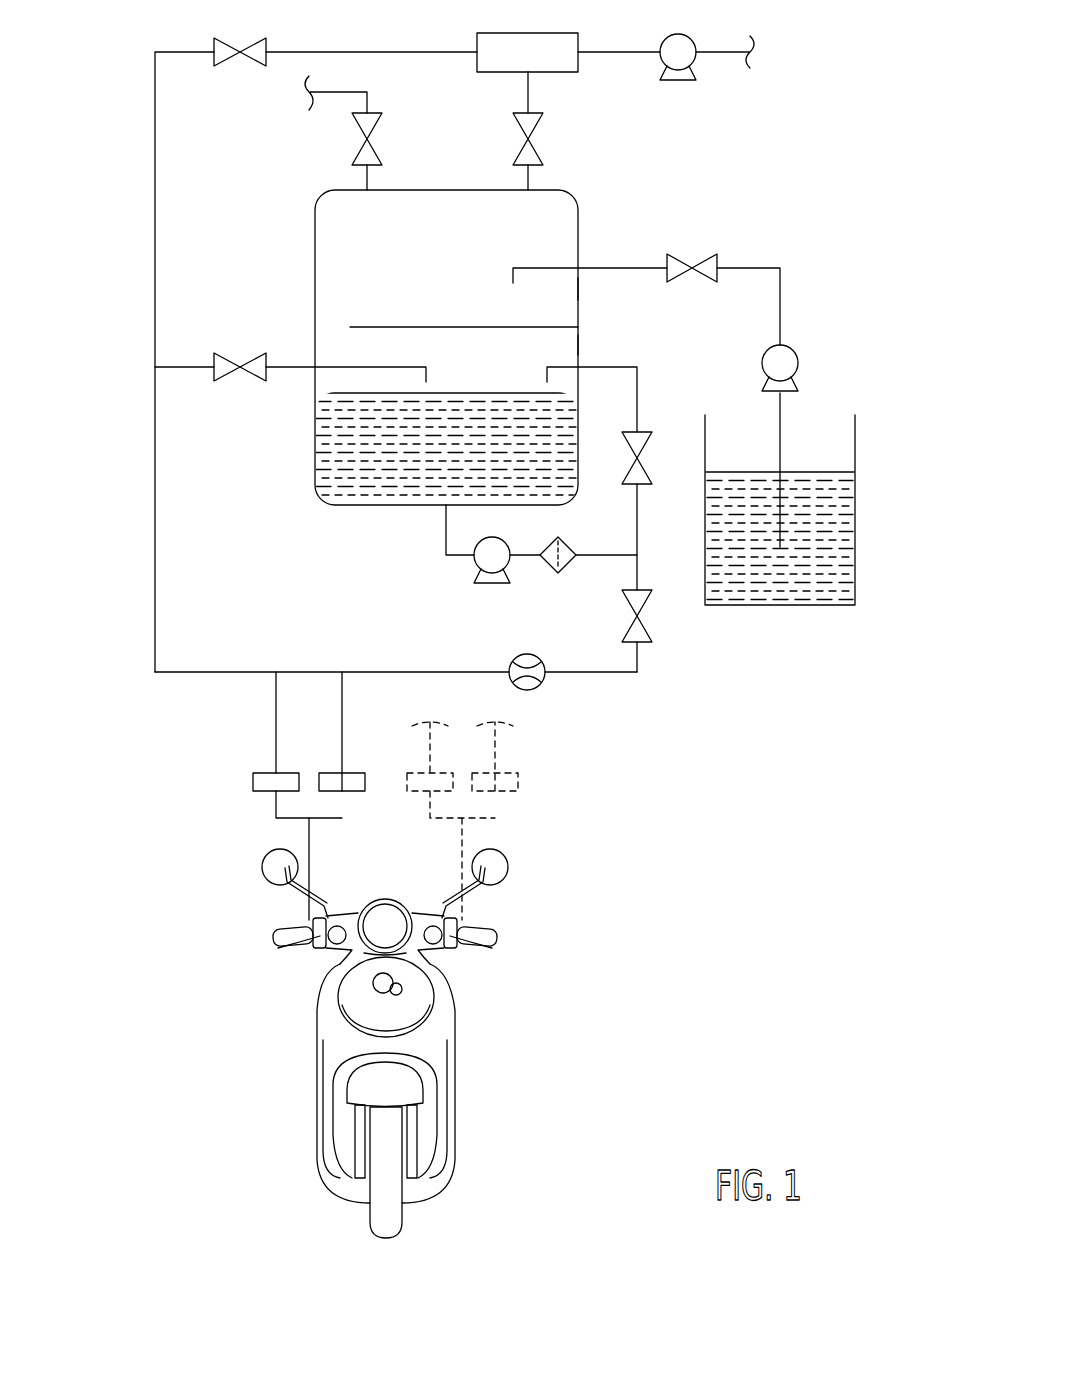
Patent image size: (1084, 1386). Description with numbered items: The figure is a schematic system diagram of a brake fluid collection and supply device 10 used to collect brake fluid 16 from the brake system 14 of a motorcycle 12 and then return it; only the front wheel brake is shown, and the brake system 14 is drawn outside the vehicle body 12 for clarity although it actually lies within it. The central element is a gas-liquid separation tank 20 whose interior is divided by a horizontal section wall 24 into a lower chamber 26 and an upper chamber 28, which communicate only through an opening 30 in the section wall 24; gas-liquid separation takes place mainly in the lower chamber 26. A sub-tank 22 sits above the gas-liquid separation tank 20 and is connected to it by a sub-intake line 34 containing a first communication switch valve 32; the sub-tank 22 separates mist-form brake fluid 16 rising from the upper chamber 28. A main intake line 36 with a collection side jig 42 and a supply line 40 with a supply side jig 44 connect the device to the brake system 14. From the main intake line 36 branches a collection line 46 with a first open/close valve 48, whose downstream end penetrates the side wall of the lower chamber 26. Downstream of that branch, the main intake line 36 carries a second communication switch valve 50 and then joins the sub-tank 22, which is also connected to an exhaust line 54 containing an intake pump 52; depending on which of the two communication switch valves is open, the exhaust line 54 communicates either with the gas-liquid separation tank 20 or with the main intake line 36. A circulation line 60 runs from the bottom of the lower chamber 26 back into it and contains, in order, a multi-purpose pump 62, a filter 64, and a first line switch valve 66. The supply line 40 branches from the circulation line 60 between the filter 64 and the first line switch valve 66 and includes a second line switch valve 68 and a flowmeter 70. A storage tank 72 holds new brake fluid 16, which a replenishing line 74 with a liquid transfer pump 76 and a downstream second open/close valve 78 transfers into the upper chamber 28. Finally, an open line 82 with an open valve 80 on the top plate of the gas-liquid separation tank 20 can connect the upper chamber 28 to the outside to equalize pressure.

The brake fluid collection and supply device 10 is at (308, 42).
The motorcycle 12 is at (472, 1000).
The brake system 14 is at (312, 848).
The brake fluid 16 is at (352, 488).
The gas-liquid separation tank 20 is at (582, 193).
The sub-tank 22 is at (560, 33).
The section wall 24 is at (475, 326).
The lower chamber 26 is at (586, 355).
The upper chamber 28 is at (586, 300).
The opening 30 is at (341, 325).
The first communication switch valve 32 is at (519, 157).
The sub-intake line 34 is at (514, 95).
The main intake line 36 is at (163, 178).
The supply line 40 is at (601, 684).
The collection side jig 42 is at (258, 773).
The supply side jig 44 is at (355, 773).
The collection line 46 is at (178, 352).
The first open/close valve 48 is at (253, 356).
The second communication switch valve 50 is at (227, 60).
The intake pump 52 is at (682, 82).
The exhaust line 54 is at (611, 73).
The circulation line 60 is at (645, 516).
The multi-purpose pump 62 is at (486, 580).
The filter 64 is at (566, 572).
The first line switch valve 66 is at (645, 432).
The second line switch valve 68 is at (642, 645).
The flowmeter 70 is at (530, 692).
The storage tank 72 is at (858, 428).
The replenishing line 74 is at (796, 306).
The liquid transfer pump 76 is at (800, 367).
The second open/close valve 78 is at (676, 272).
The open valve 80 is at (357, 157).
The open line 82 is at (345, 90).